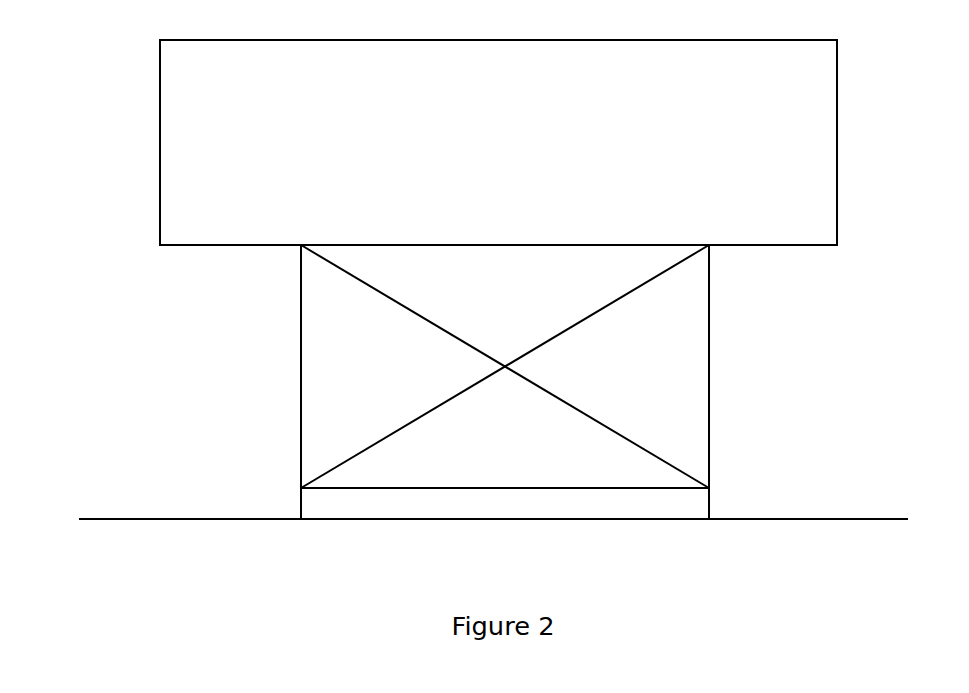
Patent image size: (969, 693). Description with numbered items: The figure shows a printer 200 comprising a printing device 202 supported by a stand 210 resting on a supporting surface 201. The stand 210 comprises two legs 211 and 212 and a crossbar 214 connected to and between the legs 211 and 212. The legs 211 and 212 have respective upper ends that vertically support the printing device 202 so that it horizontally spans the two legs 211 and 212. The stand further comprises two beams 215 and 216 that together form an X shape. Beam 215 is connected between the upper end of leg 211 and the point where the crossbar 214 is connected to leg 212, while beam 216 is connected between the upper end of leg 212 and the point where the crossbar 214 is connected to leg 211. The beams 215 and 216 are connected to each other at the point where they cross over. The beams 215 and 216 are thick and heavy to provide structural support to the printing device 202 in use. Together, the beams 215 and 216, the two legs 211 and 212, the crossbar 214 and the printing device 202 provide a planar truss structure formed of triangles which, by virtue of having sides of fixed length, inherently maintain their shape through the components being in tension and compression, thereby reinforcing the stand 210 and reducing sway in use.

The printer 200 is at (116, 59).
The supporting surface 201 is at (506, 558).
The printing device 202 is at (524, 160).
The stand 210 is at (183, 378).
The leg 211 is at (301, 437).
The leg 212 is at (709, 428).
The crossbar 214 is at (460, 488).
The beam 215 is at (383, 296).
The beam 216 is at (604, 310).